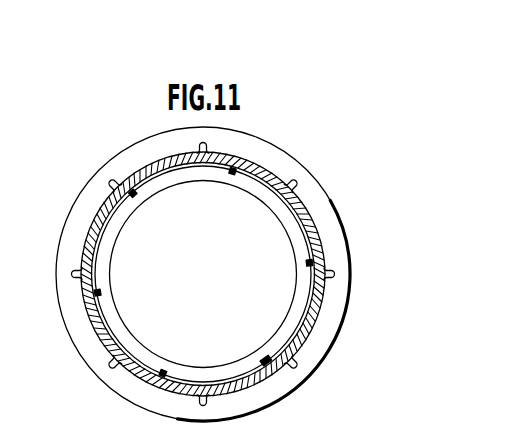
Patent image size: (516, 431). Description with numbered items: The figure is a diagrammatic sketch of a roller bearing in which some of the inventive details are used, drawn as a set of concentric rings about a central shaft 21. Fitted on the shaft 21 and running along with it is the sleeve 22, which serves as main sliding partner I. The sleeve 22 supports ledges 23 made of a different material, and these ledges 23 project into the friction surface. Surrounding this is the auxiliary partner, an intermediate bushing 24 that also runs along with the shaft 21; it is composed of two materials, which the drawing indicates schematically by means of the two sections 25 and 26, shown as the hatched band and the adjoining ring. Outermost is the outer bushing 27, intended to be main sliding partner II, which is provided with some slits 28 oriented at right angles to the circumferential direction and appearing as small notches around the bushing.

The shaft 21 is at (278, 298).
The sleeve 22 is at (292, 320).
The ledges 23 is at (295, 353).
The intermediate bushing 24 is at (123, 172).
The section 25 is at (92, 215).
The section 26 is at (87, 243).
The outer bushing 27 is at (85, 343).
The slits 28 is at (108, 363).